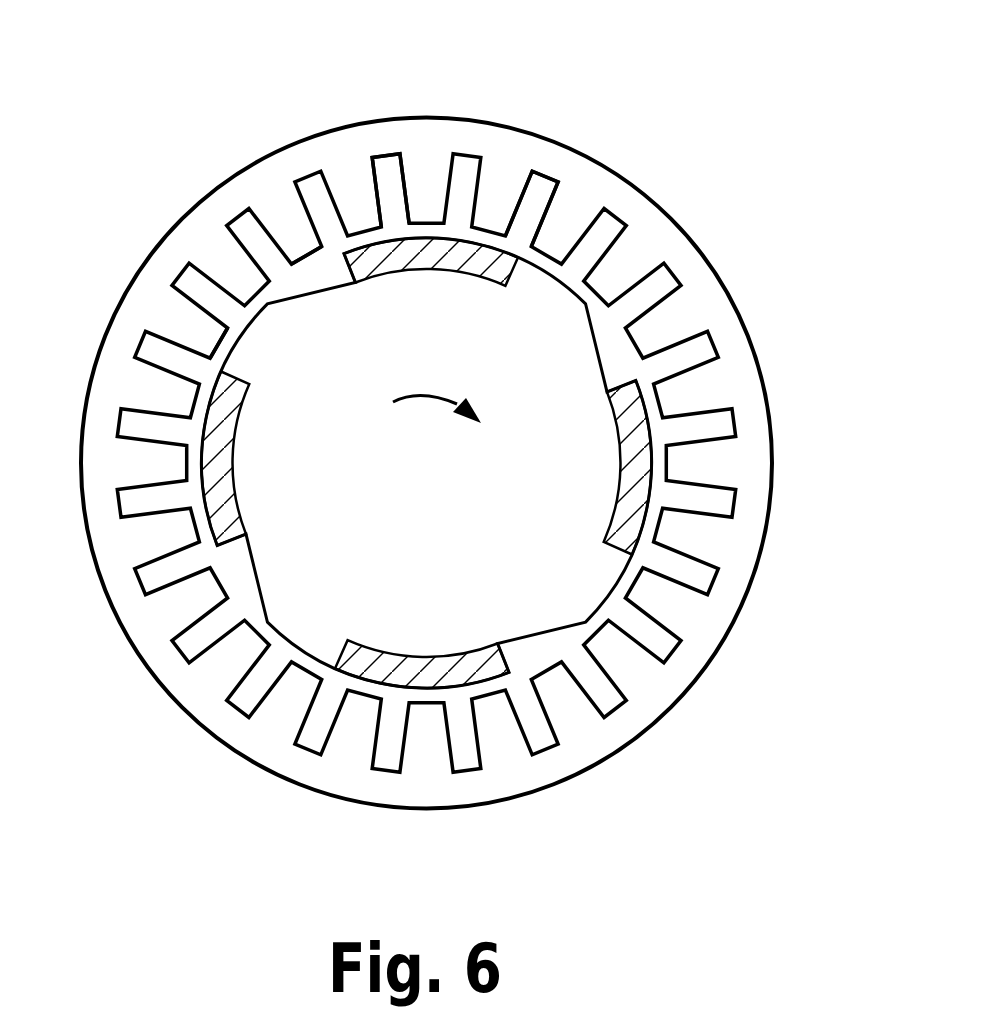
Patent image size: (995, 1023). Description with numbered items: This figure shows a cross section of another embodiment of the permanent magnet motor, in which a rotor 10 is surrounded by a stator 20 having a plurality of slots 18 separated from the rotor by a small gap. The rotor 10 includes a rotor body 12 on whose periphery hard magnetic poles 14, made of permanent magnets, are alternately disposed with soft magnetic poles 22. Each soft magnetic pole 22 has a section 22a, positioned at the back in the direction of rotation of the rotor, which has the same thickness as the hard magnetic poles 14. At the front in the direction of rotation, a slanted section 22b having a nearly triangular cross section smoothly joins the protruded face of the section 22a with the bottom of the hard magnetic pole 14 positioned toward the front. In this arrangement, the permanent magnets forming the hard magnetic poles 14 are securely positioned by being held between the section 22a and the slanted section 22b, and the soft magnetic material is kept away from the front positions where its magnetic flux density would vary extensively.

The rotor 10 is at (208, 588).
The rotor body 12 is at (540, 407).
The hard magnetic poles 14 is at (438, 253).
The slots 18 is at (393, 165).
The stator 20 is at (773, 374).
The soft magnetic poles 22 is at (280, 317).
The section 22a is at (250, 357).
The slanted section 22b is at (313, 303).